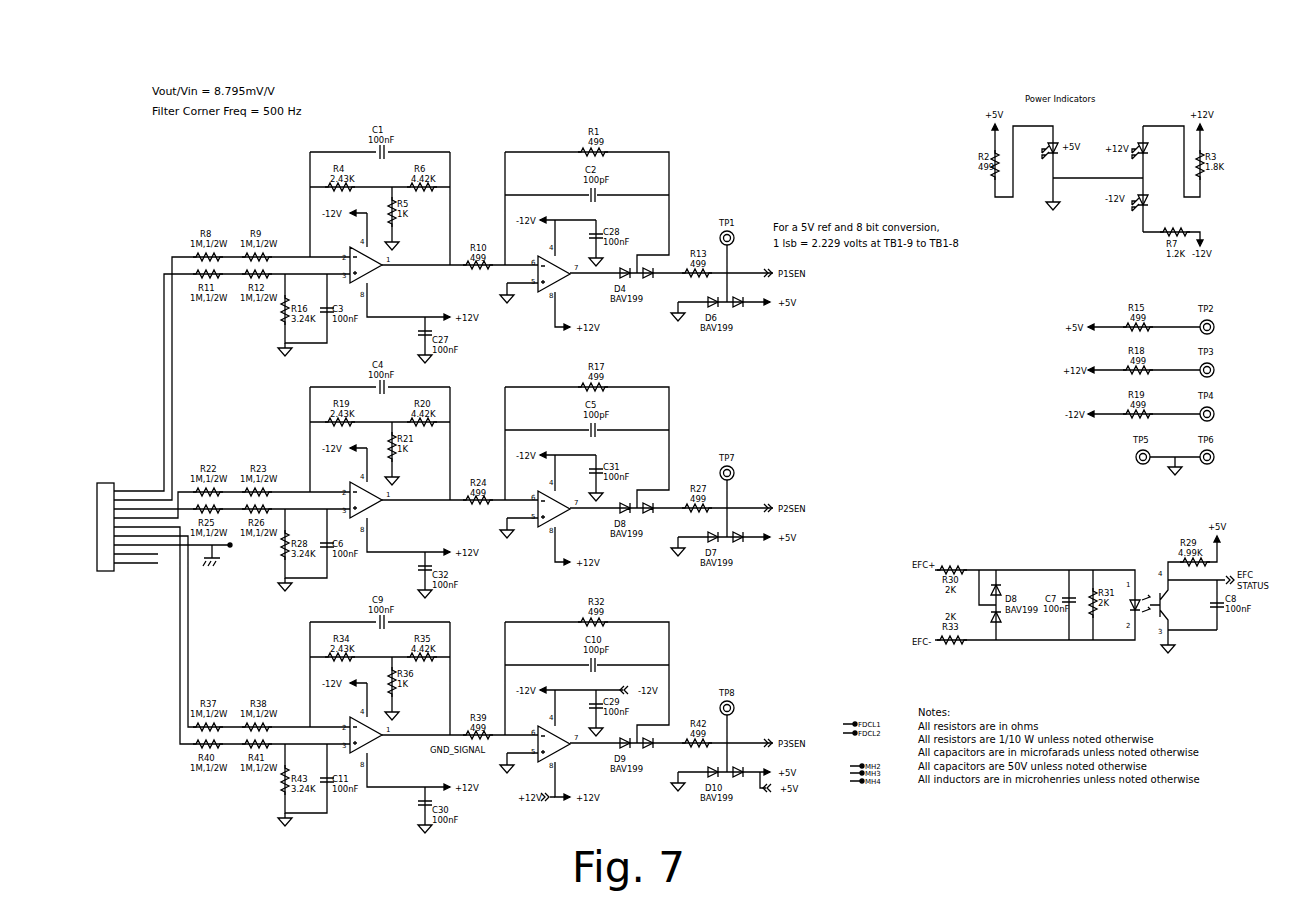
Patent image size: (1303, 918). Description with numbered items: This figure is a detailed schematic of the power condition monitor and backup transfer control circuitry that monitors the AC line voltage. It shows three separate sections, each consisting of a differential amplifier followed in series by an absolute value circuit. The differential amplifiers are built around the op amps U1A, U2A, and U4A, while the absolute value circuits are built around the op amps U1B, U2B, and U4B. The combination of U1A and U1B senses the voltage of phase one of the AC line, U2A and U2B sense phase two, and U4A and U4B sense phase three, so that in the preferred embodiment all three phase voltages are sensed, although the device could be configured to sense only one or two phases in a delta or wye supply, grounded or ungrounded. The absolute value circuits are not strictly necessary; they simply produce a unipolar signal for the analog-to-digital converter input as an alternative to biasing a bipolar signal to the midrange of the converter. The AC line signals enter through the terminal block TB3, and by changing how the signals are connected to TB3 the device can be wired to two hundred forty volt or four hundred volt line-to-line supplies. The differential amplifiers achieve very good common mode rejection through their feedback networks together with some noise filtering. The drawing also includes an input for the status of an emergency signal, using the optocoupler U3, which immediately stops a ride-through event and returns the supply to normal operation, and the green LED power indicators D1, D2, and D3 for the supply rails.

The terminal block TB3 is at (175, 500).
The op amp U1A is at (377, 274).
The op amp U1B is at (564, 279).
The op amp U2A is at (377, 509).
The op amp U2B is at (564, 514).
The op amp U4A is at (377, 744).
The op amp U4B is at (564, 749).
The optocoupler TLP181 U3 is at (1182, 594).
The green LED power indicator D1 is at (1038, 147).
The green LED power indicator D2 is at (1157, 147).
The green LED power indicator D3 is at (1157, 199).